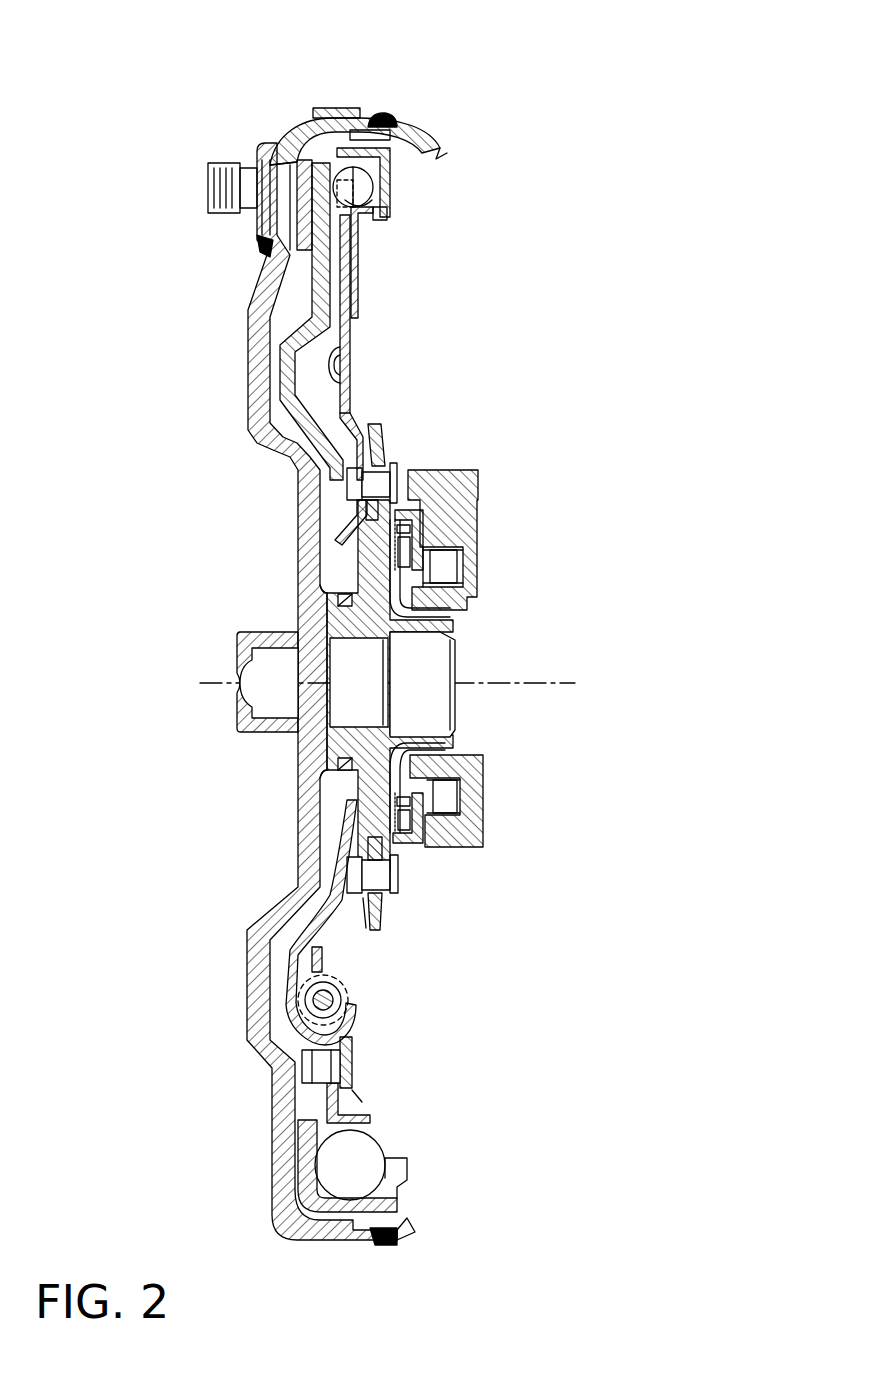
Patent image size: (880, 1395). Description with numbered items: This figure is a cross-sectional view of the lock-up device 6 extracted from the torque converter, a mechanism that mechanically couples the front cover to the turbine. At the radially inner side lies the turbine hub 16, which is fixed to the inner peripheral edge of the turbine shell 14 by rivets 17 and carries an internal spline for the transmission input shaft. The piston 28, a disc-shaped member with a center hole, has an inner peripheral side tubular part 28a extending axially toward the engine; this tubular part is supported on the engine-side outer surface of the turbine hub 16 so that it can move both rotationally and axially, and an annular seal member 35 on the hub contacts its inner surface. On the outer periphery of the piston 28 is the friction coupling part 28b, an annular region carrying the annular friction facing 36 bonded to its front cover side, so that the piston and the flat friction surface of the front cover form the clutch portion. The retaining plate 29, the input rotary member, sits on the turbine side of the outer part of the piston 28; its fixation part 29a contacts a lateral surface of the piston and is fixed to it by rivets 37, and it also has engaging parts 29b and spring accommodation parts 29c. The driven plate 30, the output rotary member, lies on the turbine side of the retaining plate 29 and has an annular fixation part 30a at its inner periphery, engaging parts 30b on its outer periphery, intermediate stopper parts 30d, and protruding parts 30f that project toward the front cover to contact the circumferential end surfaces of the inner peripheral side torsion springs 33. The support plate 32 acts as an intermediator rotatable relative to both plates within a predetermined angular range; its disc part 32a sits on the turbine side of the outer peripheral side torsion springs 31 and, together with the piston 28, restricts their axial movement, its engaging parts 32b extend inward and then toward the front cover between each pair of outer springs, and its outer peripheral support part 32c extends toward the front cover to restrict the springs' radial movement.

The lock-up device 6 is at (318, 153).
The turbine shell 14 is at (380, 427).
The turbine hub 16 is at (456, 642).
The rivets 17 is at (384, 477).
The piston 28 is at (265, 330).
The inner peripheral side tubular part 28a is at (325, 585).
The friction coupling part 28b is at (277, 145).
The retaining plate 29 is at (266, 243).
The fixation part 29a is at (332, 1097).
The engaging parts 29b is at (372, 148).
The spring accommodation parts 29c is at (312, 1000).
The driven plate 30 is at (360, 320).
The fixation part 30a is at (330, 450).
The engaging parts 30b is at (353, 168).
The intermediate stopper parts 30d is at (365, 225).
The protruding parts 30f is at (330, 372).
The outer peripheral side torsion springs 31 is at (373, 188).
The support plate 32 is at (400, 133).
The disc part 32a is at (386, 218).
The engaging parts 32b is at (318, 241).
The outer peripheral support part 32c is at (337, 108).
The inner peripheral side torsion springs 33 is at (348, 1003).
The annular seal member 35 is at (340, 603).
The annular friction facing 36 is at (215, 188).
The rivets 37 is at (303, 1060).